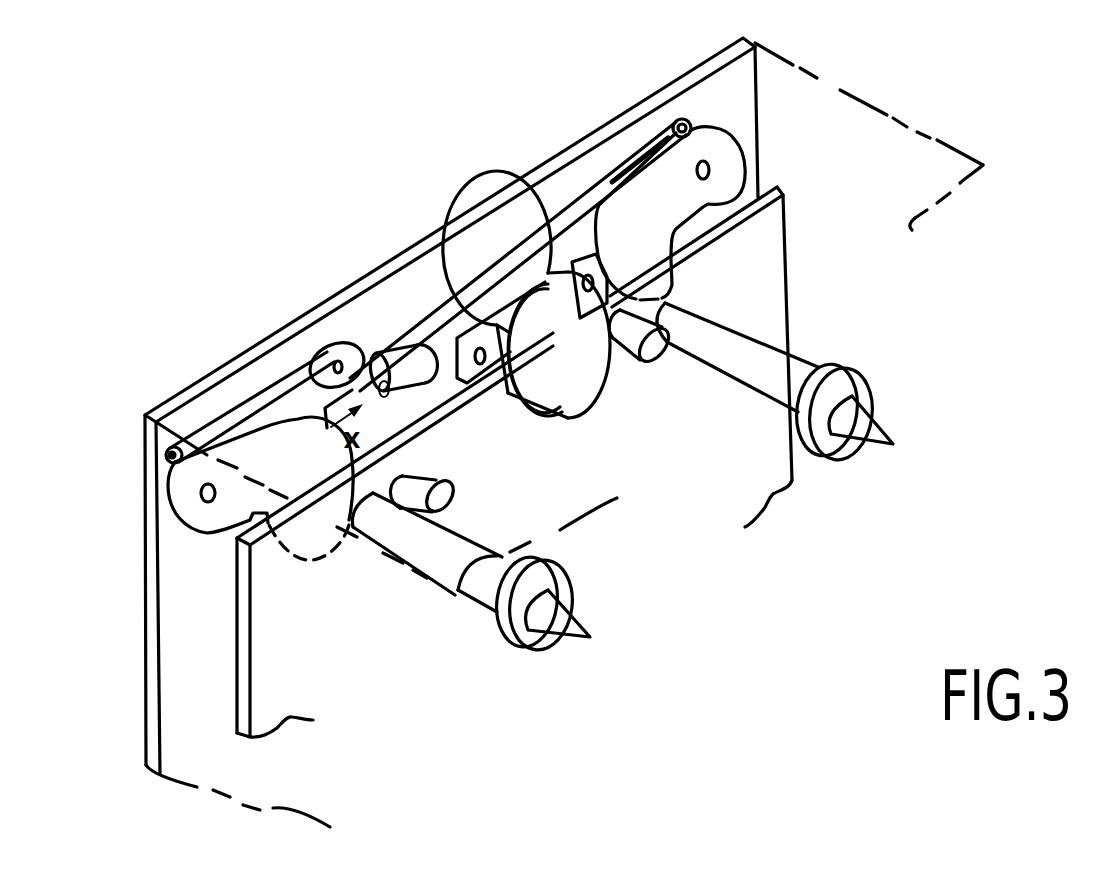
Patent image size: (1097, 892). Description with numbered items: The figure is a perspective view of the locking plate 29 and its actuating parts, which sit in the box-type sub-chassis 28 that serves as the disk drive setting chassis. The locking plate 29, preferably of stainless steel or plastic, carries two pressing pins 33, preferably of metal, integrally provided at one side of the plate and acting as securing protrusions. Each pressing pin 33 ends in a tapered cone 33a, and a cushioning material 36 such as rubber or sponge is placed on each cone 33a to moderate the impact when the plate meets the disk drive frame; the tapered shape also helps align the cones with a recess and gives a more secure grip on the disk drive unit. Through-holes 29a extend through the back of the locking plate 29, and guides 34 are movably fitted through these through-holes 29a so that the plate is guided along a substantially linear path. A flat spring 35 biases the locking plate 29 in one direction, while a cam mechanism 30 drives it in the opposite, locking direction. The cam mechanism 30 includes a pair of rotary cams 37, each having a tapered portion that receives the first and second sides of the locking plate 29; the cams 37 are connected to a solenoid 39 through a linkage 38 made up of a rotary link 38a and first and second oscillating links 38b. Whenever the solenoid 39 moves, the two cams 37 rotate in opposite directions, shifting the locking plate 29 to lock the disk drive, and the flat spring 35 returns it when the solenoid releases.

The sub-chassis 28 is at (207, 737).
The locking plate 29 is at (260, 632).
The through-holes 29a is at (613, 343).
The cam mechanism 30 is at (478, 63).
The pressing pins 33 is at (745, 352).
The tapered cones 33a is at (870, 423).
The guides 34 is at (435, 497).
The flat spring 35 is at (583, 390).
The cushioning material 36 is at (827, 447).
The rotary cams 37 is at (257, 450).
The linkage 38 is at (448, 144).
The rotary link 38a is at (346, 342).
The oscillating links 38b is at (287, 343).
The solenoid 39 is at (397, 357).